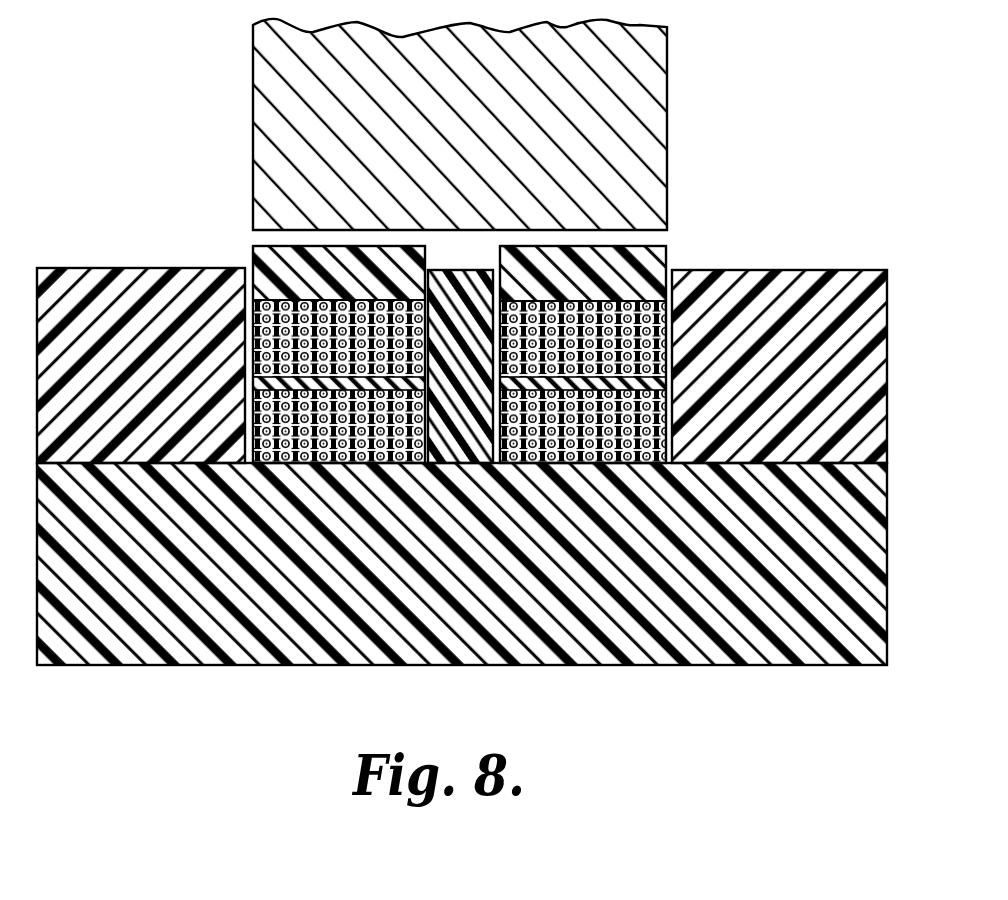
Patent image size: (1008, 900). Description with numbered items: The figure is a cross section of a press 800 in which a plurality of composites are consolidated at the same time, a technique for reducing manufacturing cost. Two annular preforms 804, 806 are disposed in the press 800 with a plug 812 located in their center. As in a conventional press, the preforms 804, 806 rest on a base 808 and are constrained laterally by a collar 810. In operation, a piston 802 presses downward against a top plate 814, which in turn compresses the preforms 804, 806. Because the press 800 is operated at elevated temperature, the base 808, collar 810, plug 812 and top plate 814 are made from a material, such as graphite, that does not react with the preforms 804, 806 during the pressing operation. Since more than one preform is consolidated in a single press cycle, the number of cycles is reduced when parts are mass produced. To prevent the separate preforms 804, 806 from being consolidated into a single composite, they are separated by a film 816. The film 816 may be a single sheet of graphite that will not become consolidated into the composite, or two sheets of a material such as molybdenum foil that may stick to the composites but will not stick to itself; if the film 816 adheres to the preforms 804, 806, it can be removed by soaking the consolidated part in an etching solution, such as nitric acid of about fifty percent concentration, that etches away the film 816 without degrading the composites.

The press 800 is at (469, 376).
The piston 802 is at (667, 115).
The preform 804 is at (227, 466).
The preform 806 is at (249, 339).
The base 808 is at (462, 598).
The collar 810 is at (93, 278).
The plug 812 is at (478, 464).
The top plate 814 is at (248, 250).
The film 816 is at (247, 380).